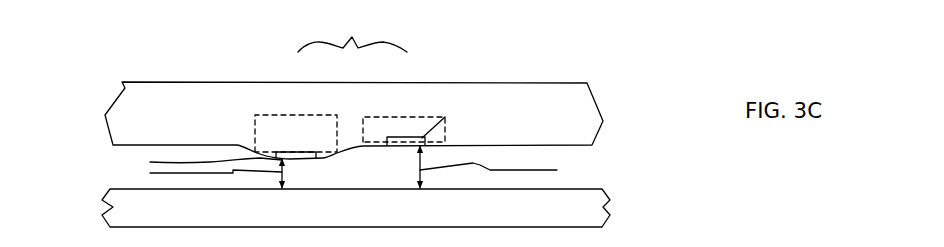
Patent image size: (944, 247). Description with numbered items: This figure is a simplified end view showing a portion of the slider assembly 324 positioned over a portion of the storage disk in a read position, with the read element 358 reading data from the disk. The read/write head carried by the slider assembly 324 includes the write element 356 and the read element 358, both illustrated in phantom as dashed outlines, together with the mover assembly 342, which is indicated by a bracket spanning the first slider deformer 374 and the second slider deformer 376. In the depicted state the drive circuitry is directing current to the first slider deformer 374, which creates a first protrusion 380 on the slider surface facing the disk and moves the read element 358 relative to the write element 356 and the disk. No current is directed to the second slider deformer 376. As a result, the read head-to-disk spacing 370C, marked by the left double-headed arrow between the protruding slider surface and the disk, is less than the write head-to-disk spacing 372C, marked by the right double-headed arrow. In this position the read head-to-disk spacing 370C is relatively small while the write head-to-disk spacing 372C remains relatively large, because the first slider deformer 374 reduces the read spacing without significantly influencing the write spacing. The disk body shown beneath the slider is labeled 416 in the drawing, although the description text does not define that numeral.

The slider assembly 324 is at (588, 82).
The mover assembly 342 is at (352, 34).
The first slider deformer 374 is at (326, 137).
The second slider deformer 376 is at (389, 133).
The write element 356 is at (445, 117).
The read element 358 is at (304, 150).
The first protrusion 380 is at (150, 162).
The read head-to-disk spacing 370C is at (150, 173).
The write head-to-disk spacing 372C is at (557, 170).
The substrate 416 is at (603, 209).